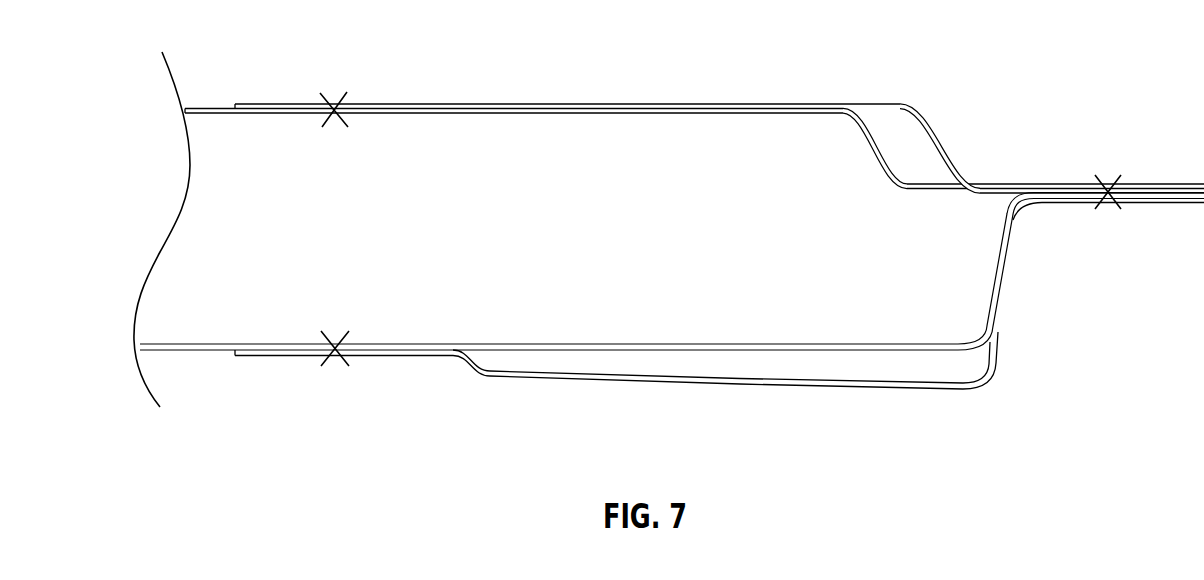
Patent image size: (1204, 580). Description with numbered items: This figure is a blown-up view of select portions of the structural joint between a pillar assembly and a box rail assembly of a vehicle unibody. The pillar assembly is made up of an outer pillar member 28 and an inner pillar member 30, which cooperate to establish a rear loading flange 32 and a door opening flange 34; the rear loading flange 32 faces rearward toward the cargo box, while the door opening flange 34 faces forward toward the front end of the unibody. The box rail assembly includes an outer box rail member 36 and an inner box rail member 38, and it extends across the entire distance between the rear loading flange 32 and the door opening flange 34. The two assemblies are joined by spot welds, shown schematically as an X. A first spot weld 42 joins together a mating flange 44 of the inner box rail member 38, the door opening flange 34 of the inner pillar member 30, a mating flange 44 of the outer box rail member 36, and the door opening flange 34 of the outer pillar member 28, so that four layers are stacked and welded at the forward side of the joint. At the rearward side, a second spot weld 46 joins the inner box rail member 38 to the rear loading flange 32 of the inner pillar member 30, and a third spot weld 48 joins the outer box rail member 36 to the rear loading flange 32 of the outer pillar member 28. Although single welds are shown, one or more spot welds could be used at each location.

The outer pillar member 28 is at (937, 390).
The inner pillar member 30 is at (795, 103).
The rear loading flange 32 is at (412, 103).
The door opening flange 34 is at (1055, 182).
The outer box rail member 36 is at (527, 352).
The inner box rail member 38 is at (442, 117).
The first spot weld 42 is at (1118, 205).
The mating flange 44 is at (1077, 182).
The second spot weld 46 is at (343, 98).
The third spot weld 48 is at (325, 358).